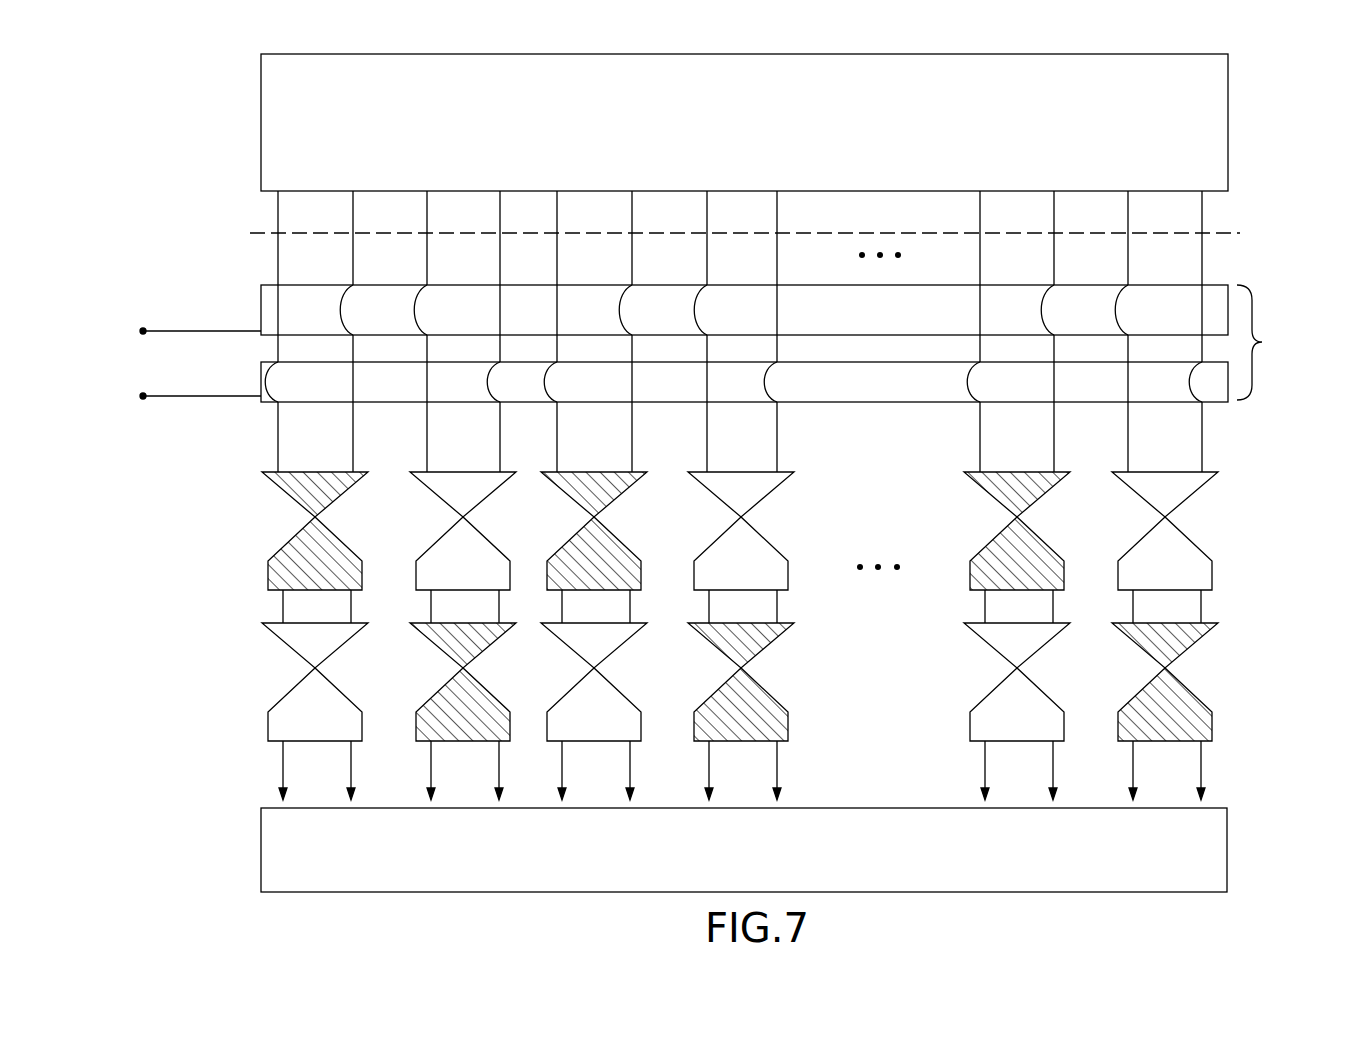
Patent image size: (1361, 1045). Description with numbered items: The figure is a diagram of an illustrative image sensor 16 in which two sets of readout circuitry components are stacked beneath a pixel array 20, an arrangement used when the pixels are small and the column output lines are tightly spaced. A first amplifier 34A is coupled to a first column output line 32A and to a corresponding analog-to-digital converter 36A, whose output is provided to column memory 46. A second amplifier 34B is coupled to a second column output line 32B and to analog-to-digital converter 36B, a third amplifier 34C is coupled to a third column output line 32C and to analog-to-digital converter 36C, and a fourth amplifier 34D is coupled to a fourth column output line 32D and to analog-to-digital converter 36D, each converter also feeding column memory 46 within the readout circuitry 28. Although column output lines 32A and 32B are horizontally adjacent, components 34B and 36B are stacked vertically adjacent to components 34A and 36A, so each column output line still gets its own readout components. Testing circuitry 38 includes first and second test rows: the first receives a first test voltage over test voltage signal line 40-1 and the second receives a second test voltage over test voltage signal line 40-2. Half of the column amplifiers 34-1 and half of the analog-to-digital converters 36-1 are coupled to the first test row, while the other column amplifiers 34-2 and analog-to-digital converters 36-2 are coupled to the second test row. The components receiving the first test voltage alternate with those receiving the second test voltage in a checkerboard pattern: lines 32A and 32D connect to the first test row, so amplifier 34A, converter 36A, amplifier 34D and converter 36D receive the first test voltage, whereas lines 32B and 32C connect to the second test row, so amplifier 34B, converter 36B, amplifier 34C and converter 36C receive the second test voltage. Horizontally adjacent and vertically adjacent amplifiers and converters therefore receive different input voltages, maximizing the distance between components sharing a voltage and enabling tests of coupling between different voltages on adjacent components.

The display 16 is at (1268, 95).
The pixel array 20 is at (1101, 78).
The display driver circuitry 28 is at (1240, 905).
The first column output line 32A is at (282, 212).
The second column output line 32B is at (355, 217).
The third column output line 32C is at (429, 210).
The fourth column output line 32D is at (502, 213).
The column amplifiers 34-1 is at (357, 472).
The column amplifiers 34-2 is at (474, 472).
The first amplifier 34A is at (284, 494).
The second amplifier 34B is at (271, 632).
The third amplifier 34C is at (435, 493).
The fourth amplifier 34D is at (431, 642).
The analog-to-digital converters 36-1 is at (274, 557).
The analog-to-digital converters 36-2 is at (790, 572).
The analog-to-digital converter 36A is at (268, 578).
The analog-to-digital converter 36B is at (268, 727).
The analog-to-digital converter 36C is at (416, 573).
The analog-to-digital converter 36D is at (428, 704).
The testing circuitry 38 is at (1257, 342).
The test voltage signal line 40-1 is at (230, 329).
The test voltage signal line 40-2 is at (239, 402).
The column memory 46 is at (1113, 893).